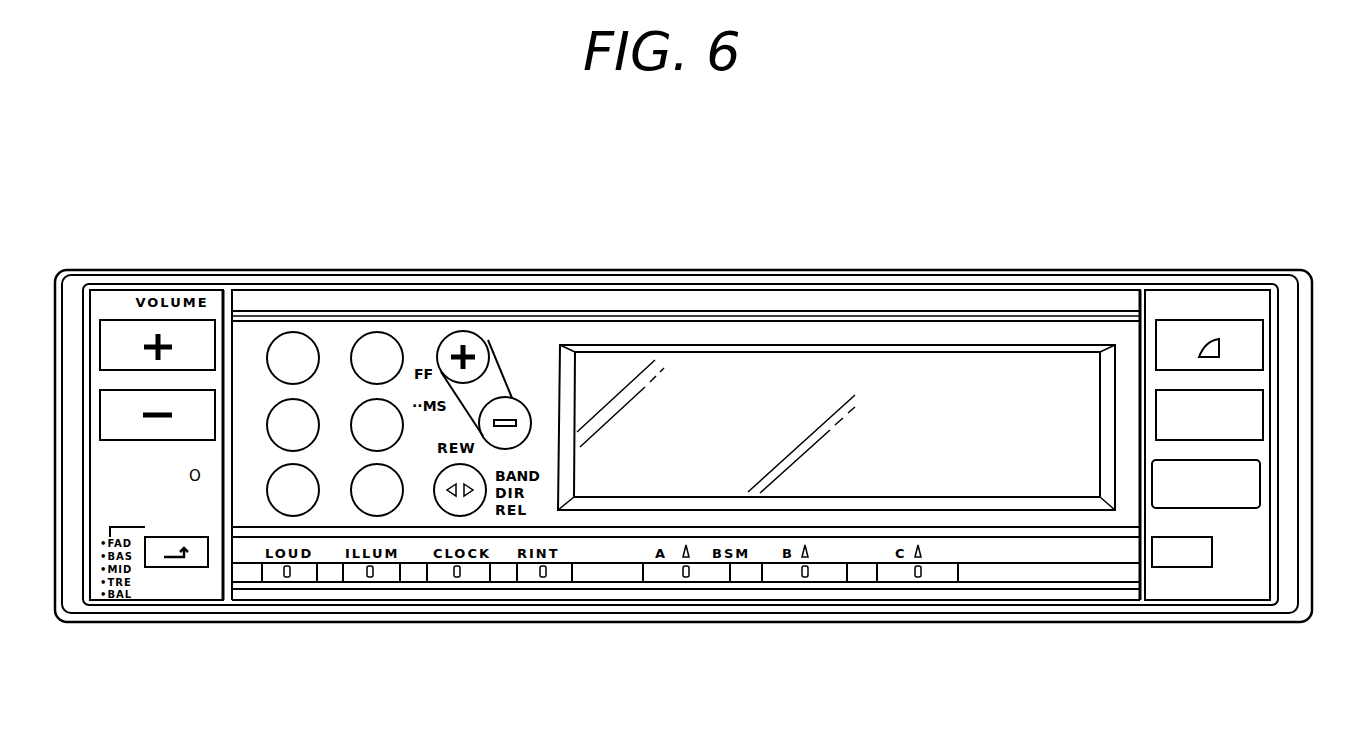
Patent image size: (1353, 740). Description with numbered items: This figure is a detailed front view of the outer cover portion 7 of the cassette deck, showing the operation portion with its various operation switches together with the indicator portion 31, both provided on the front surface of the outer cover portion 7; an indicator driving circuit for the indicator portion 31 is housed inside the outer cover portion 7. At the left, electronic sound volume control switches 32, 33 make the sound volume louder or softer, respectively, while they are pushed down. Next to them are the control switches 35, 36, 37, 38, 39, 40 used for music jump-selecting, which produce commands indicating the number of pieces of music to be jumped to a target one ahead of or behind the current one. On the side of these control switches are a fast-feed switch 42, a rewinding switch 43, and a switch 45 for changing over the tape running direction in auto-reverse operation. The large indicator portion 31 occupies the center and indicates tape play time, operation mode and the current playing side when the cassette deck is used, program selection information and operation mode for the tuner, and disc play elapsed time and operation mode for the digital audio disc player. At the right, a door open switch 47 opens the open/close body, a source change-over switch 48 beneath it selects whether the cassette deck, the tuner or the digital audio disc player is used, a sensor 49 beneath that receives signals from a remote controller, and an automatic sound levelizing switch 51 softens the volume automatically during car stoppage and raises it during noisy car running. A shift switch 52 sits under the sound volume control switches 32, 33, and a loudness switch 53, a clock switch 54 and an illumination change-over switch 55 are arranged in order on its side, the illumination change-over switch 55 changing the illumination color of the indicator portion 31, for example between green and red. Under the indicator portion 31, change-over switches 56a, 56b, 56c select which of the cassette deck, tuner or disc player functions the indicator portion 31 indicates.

The outer cover portion 7 is at (76, 612).
The indicator portion 31 is at (875, 385).
The electronic sound volume control switch 32 is at (203, 332).
The electronic sound volume control switch 33 is at (201, 414).
The control switch 35 is at (297, 332).
The control switch 36 is at (381, 332).
The control switch 37 is at (316, 404).
The control switch 38 is at (395, 403).
The control switch 39 is at (275, 508).
The control switch 40 is at (357, 508).
The fast-feed switch 42 is at (477, 334).
The rewinding switch 43 is at (507, 404).
The switch for changing over the tape running direction 45 is at (447, 510).
The door open switch 47 is at (1177, 330).
The source change-over switch 48 is at (1163, 410).
The sensor 49 is at (1238, 504).
The automatic sound levelizing switch 51 is at (1172, 566).
The shift switch 52 is at (177, 566).
The loudness switch 53 is at (285, 581).
The clock switch 54 is at (364, 581).
The illumination change-over switch 55 is at (454, 581).
The change-over switch 56a is at (672, 578).
The change-over switch 56b is at (785, 578).
The change-over switch 56c is at (899, 578).